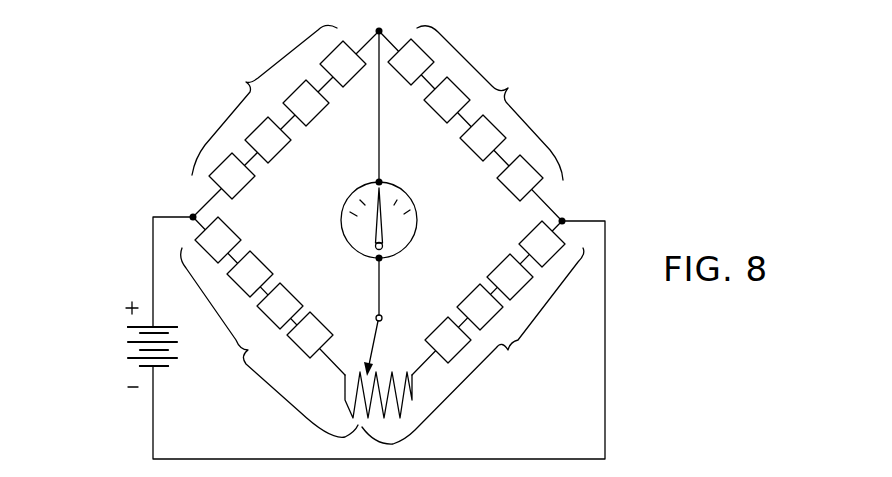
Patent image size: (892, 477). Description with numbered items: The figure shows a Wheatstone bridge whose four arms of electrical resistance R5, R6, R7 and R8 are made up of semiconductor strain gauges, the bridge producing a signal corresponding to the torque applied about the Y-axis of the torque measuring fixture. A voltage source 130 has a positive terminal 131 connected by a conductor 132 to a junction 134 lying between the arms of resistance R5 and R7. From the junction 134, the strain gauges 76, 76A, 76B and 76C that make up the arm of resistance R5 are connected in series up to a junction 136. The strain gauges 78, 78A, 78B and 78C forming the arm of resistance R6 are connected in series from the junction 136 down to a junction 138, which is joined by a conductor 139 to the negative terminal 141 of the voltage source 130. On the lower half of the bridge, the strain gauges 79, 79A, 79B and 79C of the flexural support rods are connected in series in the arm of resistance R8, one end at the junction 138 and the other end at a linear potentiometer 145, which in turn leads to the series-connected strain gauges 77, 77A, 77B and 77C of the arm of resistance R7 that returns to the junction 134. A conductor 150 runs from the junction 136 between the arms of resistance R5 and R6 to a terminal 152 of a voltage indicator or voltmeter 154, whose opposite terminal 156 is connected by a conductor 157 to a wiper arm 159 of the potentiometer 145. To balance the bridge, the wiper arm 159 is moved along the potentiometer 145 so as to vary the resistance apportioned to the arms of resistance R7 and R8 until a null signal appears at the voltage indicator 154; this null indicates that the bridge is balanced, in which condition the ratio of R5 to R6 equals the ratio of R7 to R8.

The voltage source 130 is at (118, 355).
The positive terminal 131 is at (157, 325).
The negative terminal 141 is at (157, 372).
The conductor 132 is at (152, 258).
The junction 134 is at (189, 212).
The junction 136 is at (381, 29).
The junction 138 is at (568, 214).
The conductor 139 is at (605, 372).
The linear potentiometer 145 is at (385, 370).
The conductor 150 is at (377, 143).
The terminal 152 is at (381, 181).
The voltage indicator 154 is at (419, 219).
The terminal 156 is at (377, 261).
The conductor 157 is at (381, 298).
The wiper arm 159 is at (370, 340).
The strain gauge 76 is at (232, 176).
The strain gauge 76A is at (268, 140).
The strain gauge 76B is at (306, 103).
The strain gauge 76C is at (343, 64).
The strain gauge 77 is at (310, 335).
The strain gauge 77A is at (280, 306).
The strain gauge 77B is at (250, 274).
The strain gauge 77C is at (218, 240).
The strain gauge 78 is at (411, 62).
The strain gauge 78A is at (447, 100).
The strain gauge 78B is at (483, 138).
The strain gauge 78C is at (520, 178).
The strain gauge 79 is at (542, 244).
The strain gauge 79A is at (510, 277).
The strain gauge 79B is at (480, 307).
The strain gauge 79C is at (448, 340).
The arm of electrical resistance R5 is at (264, 100).
The arm of electrical resistance R6 is at (490, 103).
The arm of electrical resistance R7 is at (269, 342).
The arm of electrical resistance R8 is at (473, 346).